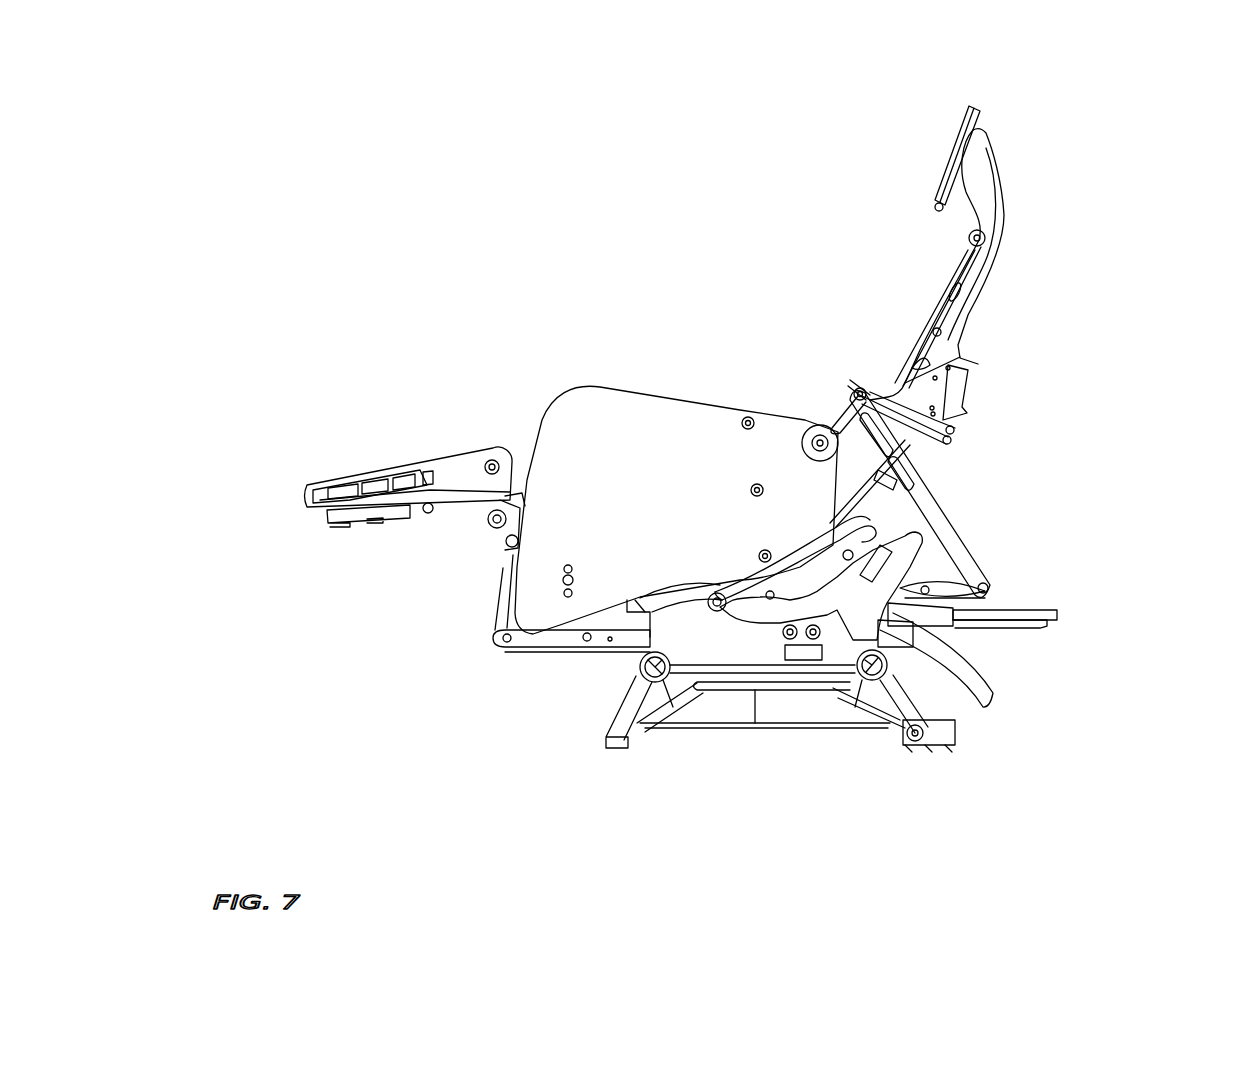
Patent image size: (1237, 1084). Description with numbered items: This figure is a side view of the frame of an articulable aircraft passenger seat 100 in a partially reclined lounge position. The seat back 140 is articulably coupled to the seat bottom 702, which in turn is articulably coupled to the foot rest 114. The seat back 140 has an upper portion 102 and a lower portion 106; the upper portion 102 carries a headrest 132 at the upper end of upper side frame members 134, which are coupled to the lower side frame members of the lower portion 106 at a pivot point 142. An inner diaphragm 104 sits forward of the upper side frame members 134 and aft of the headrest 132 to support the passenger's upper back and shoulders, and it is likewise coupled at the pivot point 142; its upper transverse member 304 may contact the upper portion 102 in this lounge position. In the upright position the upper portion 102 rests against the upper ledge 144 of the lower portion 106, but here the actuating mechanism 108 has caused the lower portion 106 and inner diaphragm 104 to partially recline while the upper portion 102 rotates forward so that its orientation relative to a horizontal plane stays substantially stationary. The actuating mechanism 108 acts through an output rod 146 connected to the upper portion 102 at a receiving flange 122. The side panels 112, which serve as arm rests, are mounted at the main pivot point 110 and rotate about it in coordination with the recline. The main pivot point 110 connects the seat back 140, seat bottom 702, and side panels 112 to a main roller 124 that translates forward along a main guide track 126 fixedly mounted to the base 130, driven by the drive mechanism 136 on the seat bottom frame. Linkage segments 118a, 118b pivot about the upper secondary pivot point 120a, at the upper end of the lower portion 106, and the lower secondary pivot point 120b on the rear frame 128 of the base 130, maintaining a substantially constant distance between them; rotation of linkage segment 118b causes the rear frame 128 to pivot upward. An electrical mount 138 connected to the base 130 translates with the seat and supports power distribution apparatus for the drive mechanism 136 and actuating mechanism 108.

The aircraft passenger seat 100 is at (876, 158).
The upper portion of the seat back 102 is at (995, 162).
The inner diaphragm 104 is at (945, 308).
The lower portion of the seat back 106 is at (935, 472).
The actuating mechanism 108 is at (872, 528).
The main pivot point 110 is at (812, 438).
The side panel 112 is at (679, 413).
The foot rest 114 is at (397, 473).
The linkage segment 118a is at (973, 580).
The linkage segment 118b is at (980, 592).
The upper secondary pivot point 120a is at (858, 394).
The lower secondary pivot point 120b is at (905, 602).
The receiving flange 122 is at (945, 428).
The main roller 124 is at (720, 608).
The main guide track 126 is at (707, 612).
The rear frame 128 is at (985, 702).
The base 130 is at (883, 723).
The headrest 132 is at (960, 130).
The upper side frame members 134 is at (989, 279).
The drive mechanism 136 is at (560, 648).
The electrical mount 138 is at (992, 626).
The seat back 140 is at (1061, 179).
The pivot point 142 is at (865, 385).
The upper ledge 144 is at (905, 445).
The output rod 146 is at (897, 438).
The upper transverse member 304 is at (968, 238).
The seat bottom 702 is at (497, 527).